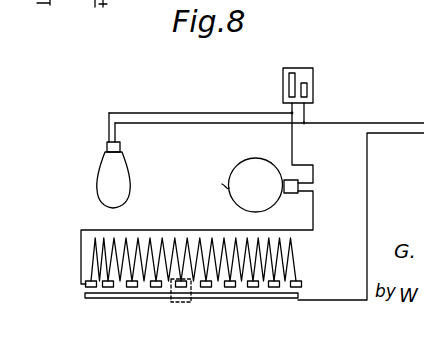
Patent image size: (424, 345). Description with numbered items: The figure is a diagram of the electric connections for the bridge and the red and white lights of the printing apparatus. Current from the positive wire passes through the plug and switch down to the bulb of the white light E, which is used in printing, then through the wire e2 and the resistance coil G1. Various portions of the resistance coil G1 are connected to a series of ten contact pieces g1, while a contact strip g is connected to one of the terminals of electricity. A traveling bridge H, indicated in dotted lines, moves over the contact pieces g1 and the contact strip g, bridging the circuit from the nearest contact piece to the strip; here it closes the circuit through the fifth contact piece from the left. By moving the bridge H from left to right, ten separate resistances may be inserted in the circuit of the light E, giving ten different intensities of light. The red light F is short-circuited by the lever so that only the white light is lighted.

The red light F is at (97, 188).
The white light E is at (232, 178).
The wire e2 is at (313, 195).
The resistance coil G1 is at (90, 261).
The contact pieces g1 is at (310, 258).
The contact strip g is at (85, 295).
The traveling bridge H is at (174, 303).